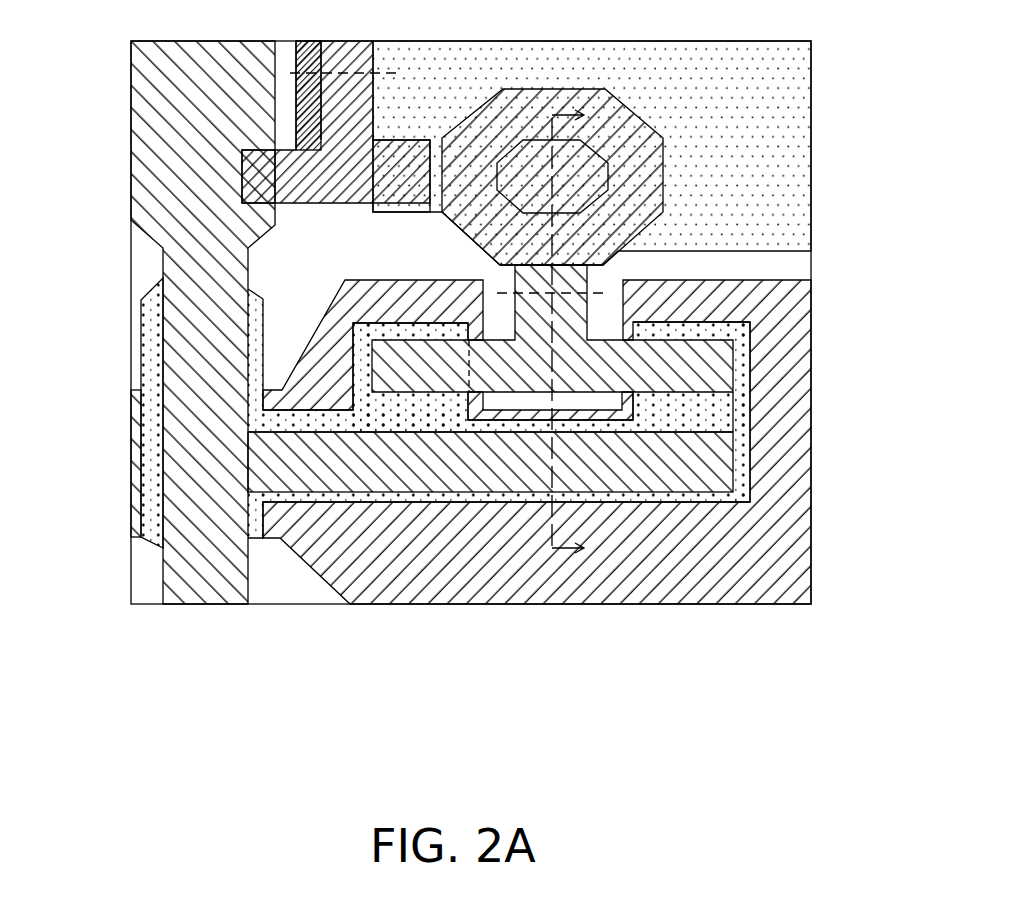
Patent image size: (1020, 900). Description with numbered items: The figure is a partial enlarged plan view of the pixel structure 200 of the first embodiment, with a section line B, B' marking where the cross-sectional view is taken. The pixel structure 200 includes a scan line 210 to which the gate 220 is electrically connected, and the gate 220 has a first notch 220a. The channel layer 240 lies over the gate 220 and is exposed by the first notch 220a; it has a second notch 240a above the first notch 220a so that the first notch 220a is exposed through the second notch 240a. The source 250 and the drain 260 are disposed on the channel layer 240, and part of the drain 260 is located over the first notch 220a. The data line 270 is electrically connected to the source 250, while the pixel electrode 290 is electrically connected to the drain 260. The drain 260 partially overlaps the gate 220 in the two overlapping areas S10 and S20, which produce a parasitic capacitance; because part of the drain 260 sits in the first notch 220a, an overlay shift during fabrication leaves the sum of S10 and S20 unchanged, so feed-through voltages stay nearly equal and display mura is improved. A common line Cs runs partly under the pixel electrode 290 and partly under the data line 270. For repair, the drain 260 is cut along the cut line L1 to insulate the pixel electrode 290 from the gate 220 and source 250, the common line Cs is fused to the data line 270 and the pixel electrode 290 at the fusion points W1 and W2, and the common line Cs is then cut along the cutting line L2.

The pixel structure 200 is at (818, 800).
The scan line 210 is at (137, 478).
The gate 220 is at (787, 300).
The first notch 220a is at (510, 412).
The channel layer 240 is at (730, 407).
The second notch 240a is at (622, 420).
The source 250 is at (717, 470).
The drain 260 is at (527, 318).
The data line 270 is at (150, 178).
The pixel electrode 290 is at (768, 103).
The common line Cs is at (320, 193).
The fusion point W1 is at (418, 178).
The fusion point W2 is at (258, 180).
The cut line L1 is at (556, 281).
The cutting line L2 is at (360, 75).
The overlapping area S10 is at (398, 392).
The overlapping area S20 is at (680, 392).
The section line B-B' B is at (581, 328).
The section line B- B' is at (584, 560).